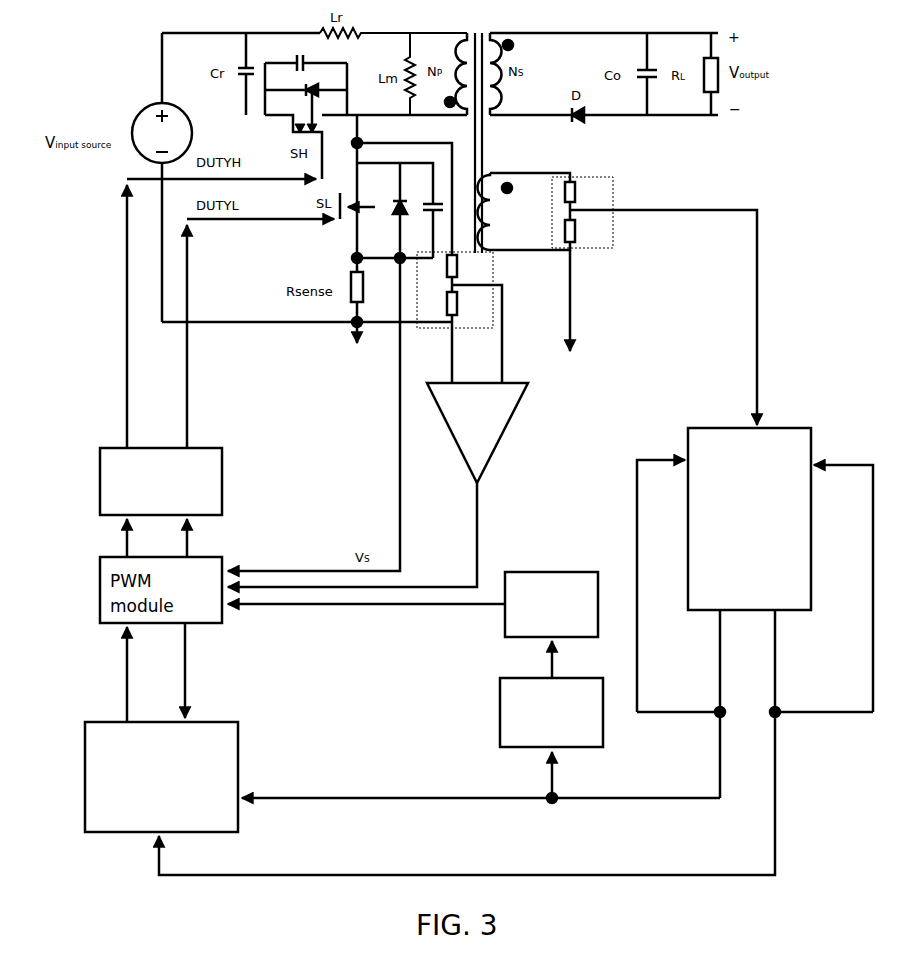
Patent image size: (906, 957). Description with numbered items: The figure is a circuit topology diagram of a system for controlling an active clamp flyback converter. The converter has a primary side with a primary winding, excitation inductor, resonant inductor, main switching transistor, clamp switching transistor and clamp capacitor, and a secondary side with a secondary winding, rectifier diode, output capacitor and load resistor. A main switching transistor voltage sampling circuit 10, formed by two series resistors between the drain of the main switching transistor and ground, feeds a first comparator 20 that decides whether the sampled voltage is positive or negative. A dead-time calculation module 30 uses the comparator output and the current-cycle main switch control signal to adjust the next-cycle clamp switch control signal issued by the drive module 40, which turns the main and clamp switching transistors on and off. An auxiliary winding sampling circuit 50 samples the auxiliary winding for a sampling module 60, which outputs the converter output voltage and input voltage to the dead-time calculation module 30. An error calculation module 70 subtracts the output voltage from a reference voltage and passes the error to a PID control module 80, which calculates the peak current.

The main switching transistor voltage sampling circuit 10 is at (493, 292).
The first comparator 20 is at (522, 383).
The dead-time calculation module 30 is at (238, 745).
The drive module 40 is at (98, 455).
The auxiliary winding sampling circuit 50 is at (598, 177).
The sampling module 60 is at (785, 428).
The error calculation module 70 is at (590, 678).
The PID control module 80 is at (590, 572).